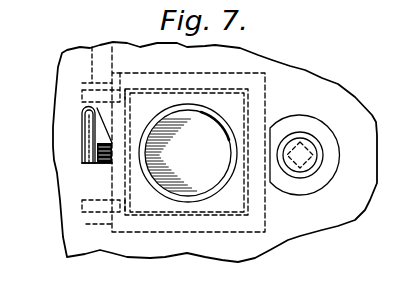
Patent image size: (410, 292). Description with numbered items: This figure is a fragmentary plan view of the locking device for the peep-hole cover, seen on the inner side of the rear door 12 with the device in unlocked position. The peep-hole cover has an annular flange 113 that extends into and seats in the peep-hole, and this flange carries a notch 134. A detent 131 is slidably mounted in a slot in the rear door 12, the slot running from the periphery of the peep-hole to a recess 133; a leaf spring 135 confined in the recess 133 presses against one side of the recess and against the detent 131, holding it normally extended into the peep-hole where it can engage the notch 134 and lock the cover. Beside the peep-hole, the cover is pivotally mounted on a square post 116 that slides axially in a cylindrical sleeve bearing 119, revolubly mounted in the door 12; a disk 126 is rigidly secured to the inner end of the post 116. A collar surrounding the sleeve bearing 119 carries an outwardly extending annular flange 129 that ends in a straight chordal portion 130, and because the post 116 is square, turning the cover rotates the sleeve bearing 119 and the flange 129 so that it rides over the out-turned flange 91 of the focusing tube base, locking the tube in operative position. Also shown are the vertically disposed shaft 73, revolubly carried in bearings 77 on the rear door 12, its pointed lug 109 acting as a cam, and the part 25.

The rear door 12 is at (302, 236).
The guide member 25 is at (82, 98).
The shaft 73 is at (93, 47).
The bearings 77 is at (82, 82).
The flange 91 is at (242, 226).
The pointed lug 109 is at (100, 149).
The annular flange 113 is at (193, 201).
The square post 116 is at (313, 157).
The sleeve bearing 119 is at (318, 145).
The disk 126 is at (310, 166).
The annular flange 129 is at (322, 180).
The chordal portion 130 is at (275, 130).
The detent 131 is at (103, 165).
The recess 133 is at (108, 152).
The notch 134 is at (142, 165).
The leaf spring 135 is at (82, 142).